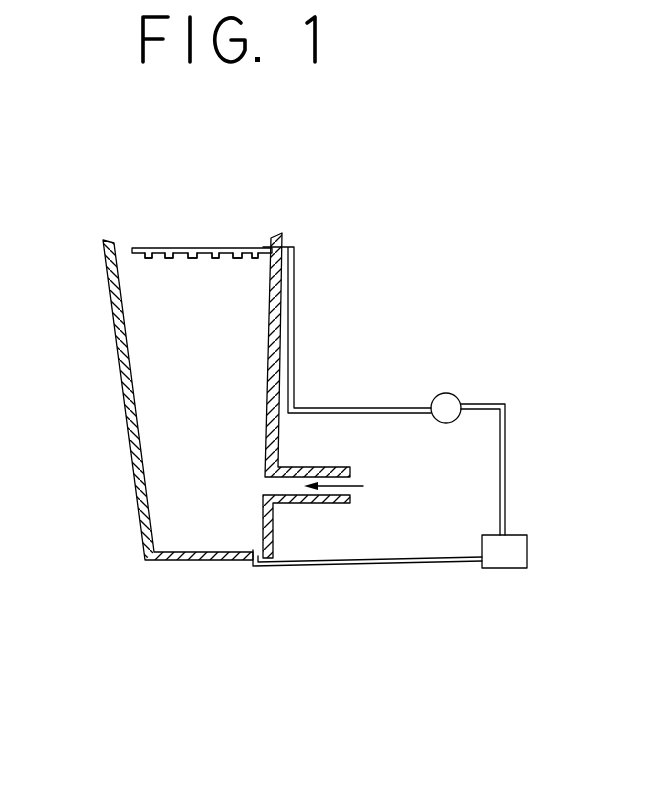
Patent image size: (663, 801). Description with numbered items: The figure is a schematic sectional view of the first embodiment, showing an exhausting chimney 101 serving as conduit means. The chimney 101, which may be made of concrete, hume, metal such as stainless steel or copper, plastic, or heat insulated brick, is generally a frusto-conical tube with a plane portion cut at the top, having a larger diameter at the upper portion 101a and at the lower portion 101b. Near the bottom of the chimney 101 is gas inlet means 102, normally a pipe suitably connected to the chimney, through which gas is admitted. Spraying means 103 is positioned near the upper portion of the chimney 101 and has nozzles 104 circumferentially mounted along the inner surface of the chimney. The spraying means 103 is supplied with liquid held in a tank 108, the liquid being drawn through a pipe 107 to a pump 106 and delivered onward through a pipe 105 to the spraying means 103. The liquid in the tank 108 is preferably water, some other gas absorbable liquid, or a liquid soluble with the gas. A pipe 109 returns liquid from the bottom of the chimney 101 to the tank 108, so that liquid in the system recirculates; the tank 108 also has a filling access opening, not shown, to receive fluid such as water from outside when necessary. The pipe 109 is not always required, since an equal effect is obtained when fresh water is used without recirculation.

The exhausting chimney 101 is at (191, 398).
The upper portion 101a is at (185, 237).
The lower portion 101b is at (194, 562).
The gas inlet means 102 is at (310, 466).
The spraying means 103 is at (202, 240).
The nozzles 104 is at (190, 258).
The pipe 105 is at (296, 347).
The pump 106 is at (453, 394).
The pipe 107 is at (507, 456).
The tank 108 is at (517, 537).
The pipe 109 is at (370, 565).